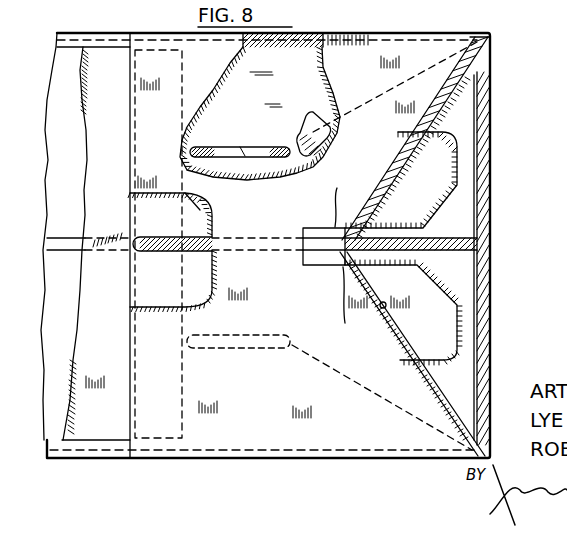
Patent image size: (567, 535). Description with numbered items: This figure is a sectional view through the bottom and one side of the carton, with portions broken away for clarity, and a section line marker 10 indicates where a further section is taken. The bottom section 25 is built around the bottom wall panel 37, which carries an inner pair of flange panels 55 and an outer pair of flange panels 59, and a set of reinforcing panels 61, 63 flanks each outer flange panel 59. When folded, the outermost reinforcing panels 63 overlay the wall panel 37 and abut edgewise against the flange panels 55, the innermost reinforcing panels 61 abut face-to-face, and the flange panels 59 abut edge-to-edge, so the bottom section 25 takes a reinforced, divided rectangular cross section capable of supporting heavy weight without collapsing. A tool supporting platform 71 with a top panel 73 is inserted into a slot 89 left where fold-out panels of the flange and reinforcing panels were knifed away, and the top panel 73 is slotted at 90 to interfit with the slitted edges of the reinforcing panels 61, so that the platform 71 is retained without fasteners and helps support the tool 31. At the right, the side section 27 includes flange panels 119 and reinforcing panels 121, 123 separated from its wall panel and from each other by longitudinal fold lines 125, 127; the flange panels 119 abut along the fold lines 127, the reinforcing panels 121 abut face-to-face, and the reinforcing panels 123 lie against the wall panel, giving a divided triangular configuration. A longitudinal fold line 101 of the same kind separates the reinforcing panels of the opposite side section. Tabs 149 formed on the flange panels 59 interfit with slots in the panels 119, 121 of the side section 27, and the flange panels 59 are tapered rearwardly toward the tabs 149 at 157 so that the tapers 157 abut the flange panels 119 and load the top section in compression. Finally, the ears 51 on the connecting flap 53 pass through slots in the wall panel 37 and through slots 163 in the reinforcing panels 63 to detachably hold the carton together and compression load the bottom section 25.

The section line 10 is at (82, 0).
The bottom section 25 is at (143, 460).
The side section 27 is at (491, 171).
The tool 31 is at (490, 232).
The bottom wall panel 37 is at (66, 2).
The projecting ears 51 is at (218, 150).
The connecting flap 53 is at (308, 112).
The flange panels 55 is at (298, 36).
The flange panels 59 is at (276, 221).
The reinforcing panels 61 is at (197, 236).
The reinforcing panels 63 is at (262, 94).
The tool supporting platform 71 is at (82, 192).
The top panel 73 is at (160, 294).
The slot 89 is at (58, 446).
The slot 90 is at (153, 240).
The longitudinal fold lines 101 is at (492, 248).
The flange panels 119 is at (447, 102).
The reinforcing panels 121 is at (450, 236).
The reinforcing panels 123 is at (480, 123).
The longitudinal fold lines 125 is at (492, 38).
The longitudinal fold lines 127 is at (326, 255).
The tabs 149 is at (414, 138).
The tapers 157 is at (388, 180).
The slots 163 is at (246, 152).